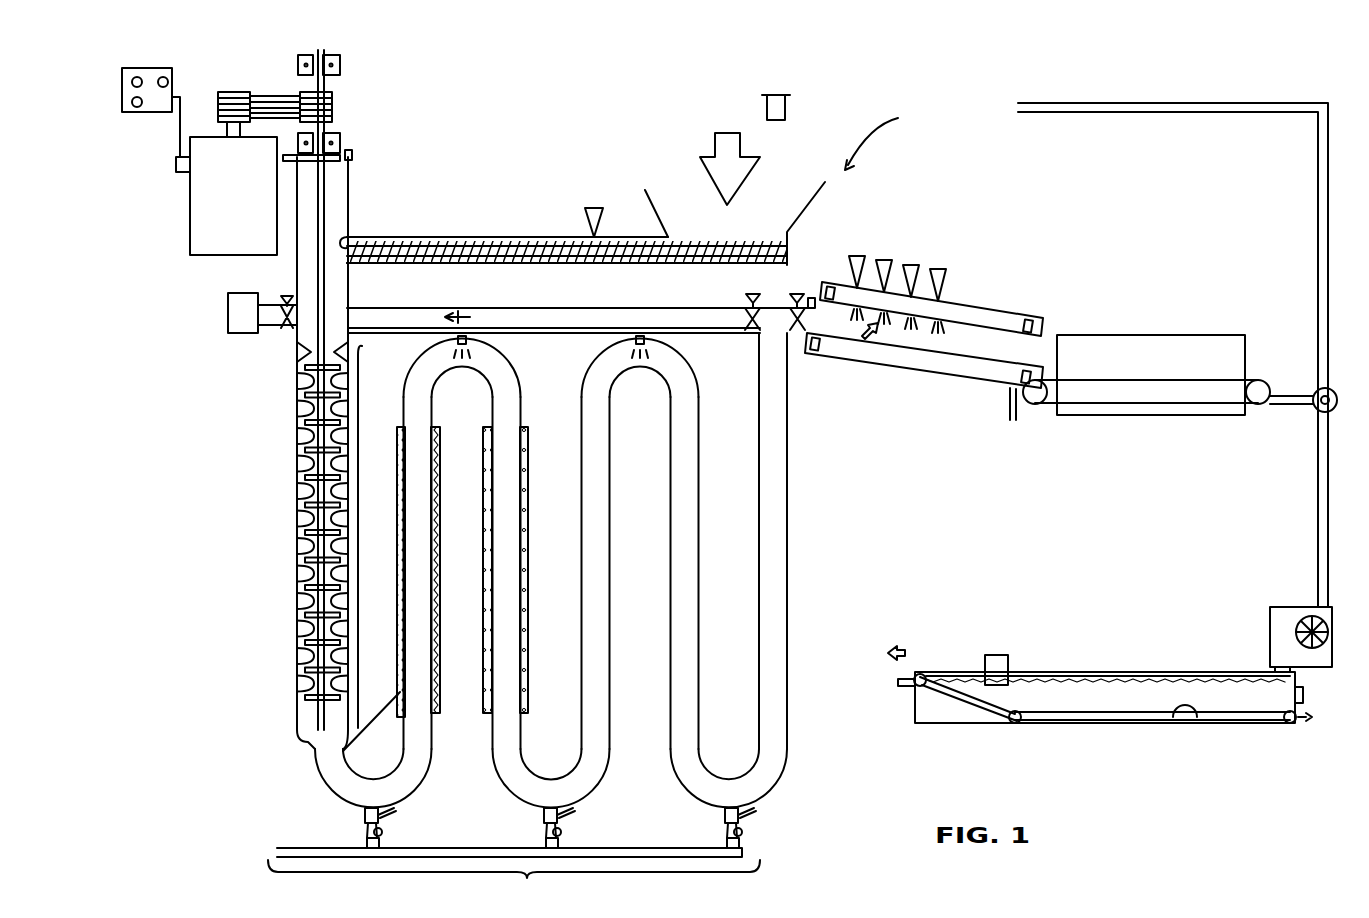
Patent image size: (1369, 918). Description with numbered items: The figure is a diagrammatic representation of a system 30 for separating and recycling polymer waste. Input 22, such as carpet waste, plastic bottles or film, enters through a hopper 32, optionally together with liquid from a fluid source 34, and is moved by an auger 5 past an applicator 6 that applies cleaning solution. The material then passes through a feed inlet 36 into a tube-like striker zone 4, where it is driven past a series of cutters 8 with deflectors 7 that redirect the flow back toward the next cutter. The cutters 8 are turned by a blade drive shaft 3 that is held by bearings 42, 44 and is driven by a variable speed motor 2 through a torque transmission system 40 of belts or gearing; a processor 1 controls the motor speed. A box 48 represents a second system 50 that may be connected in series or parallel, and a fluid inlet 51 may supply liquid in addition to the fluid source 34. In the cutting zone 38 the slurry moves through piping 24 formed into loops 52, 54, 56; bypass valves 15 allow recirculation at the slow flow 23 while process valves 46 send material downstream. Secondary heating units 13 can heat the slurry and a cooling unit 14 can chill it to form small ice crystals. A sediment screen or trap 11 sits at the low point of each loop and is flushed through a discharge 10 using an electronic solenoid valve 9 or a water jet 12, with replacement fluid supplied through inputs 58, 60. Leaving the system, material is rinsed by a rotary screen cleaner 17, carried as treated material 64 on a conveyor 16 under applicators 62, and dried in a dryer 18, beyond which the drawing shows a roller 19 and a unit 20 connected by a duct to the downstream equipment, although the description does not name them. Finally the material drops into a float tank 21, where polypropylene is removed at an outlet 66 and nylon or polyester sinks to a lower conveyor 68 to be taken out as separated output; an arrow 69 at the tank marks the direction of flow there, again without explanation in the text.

The processor 1 is at (168, 70).
The variable speed motor 2 is at (240, 196).
The blade drive shaft 3 is at (323, 217).
The striker zone 4 is at (283, 334).
The auger 5 is at (520, 243).
The applicator 6 is at (596, 208).
The deflector 7 is at (297, 390).
The cutter 8 is at (306, 463).
The electronic solenoid valve 9 is at (365, 836).
The discharge 10 is at (650, 850).
The sediment screen or trap 11 is at (745, 810).
The water jet 12 is at (744, 834).
The secondary heating unit 13 is at (312, 746).
The cooling unit 14 is at (487, 700).
The bypass valve 15 is at (747, 318).
The conveyor 16 is at (968, 345).
The rotary screen cleaner 17 is at (815, 310).
The dryer 18 is at (1130, 350).
The roller 19 is at (1316, 408).
The blower 20 is at (1272, 660).
The float tank 21 is at (1118, 700).
The input 22 is at (740, 177).
The flow 23 is at (458, 311).
The piping 24 is at (789, 720).
The system 30 is at (879, 136).
The hopper 32 is at (808, 207).
The fluid source 34 is at (785, 110).
The feed inlet 36 is at (350, 232).
The cutting zone 38 is at (360, 506).
The torque transmission system 40 is at (269, 82).
The bearing 42 is at (340, 65).
The bearing 44 is at (340, 133).
The process valve 46 is at (797, 293).
The box 48 is at (228, 300).
The system 50 is at (514, 856).
The fluid inlet 51 is at (352, 152).
The loop 52 is at (434, 800).
The loop 54 is at (524, 803).
The loop 56 is at (697, 803).
The input 58 is at (470, 342).
The input 60 is at (647, 340).
The applicator 62 is at (858, 260).
The treated material 64 is at (872, 345).
The outlet 66 is at (1003, 655).
The lower conveyor 68 is at (1196, 712).
The outlet arrow 69 is at (893, 648).